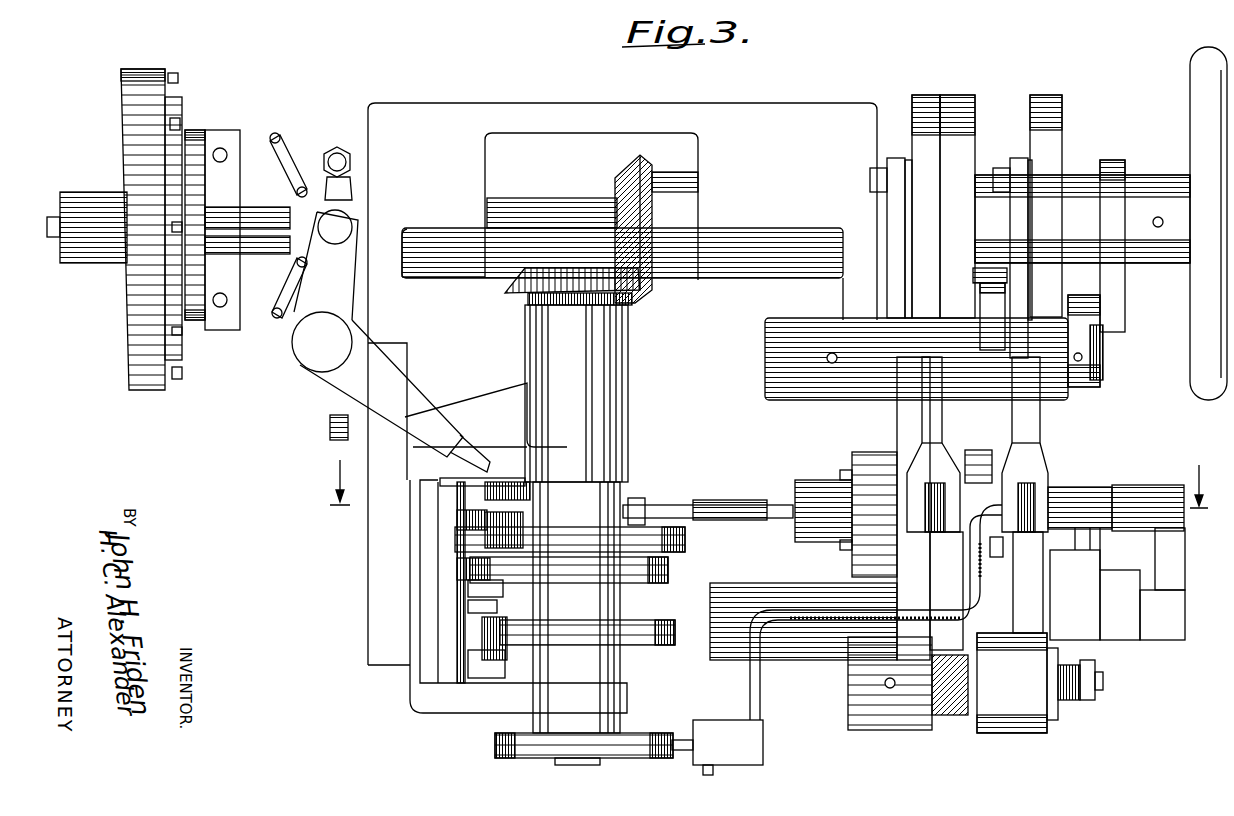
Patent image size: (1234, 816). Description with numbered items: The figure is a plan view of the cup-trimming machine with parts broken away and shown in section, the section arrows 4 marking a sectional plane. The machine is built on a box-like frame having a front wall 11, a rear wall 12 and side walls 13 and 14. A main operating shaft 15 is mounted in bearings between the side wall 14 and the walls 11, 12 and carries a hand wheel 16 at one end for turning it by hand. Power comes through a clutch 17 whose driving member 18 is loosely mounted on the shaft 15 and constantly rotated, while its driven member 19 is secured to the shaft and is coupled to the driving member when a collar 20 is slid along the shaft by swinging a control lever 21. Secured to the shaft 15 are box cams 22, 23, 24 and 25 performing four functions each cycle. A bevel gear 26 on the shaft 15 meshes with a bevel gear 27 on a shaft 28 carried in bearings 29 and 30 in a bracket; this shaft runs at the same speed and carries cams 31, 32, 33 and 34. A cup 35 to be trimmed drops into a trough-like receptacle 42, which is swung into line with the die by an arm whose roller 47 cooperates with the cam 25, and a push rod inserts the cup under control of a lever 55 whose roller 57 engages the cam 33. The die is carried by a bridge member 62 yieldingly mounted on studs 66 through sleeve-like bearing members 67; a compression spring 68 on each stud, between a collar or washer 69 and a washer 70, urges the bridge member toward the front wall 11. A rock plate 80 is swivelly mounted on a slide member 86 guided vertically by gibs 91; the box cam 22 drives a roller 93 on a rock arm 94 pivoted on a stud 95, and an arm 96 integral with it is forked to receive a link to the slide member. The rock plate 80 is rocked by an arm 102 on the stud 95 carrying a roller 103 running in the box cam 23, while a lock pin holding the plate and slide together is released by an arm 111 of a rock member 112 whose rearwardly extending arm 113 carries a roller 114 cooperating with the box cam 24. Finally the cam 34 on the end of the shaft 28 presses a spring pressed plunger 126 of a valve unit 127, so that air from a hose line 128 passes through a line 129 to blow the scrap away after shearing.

The section line 4- 4 is at (769, 497).
The front wall 11 is at (897, 418).
The rear wall 12 is at (410, 363).
The side wall 13 is at (668, 665).
The side wall 14 is at (664, 112).
The main operating shaft 15 is at (552, 215).
The hand wheel 16 is at (1202, 112).
The clutch 17 is at (193, 97).
The driving member 18 is at (142, 130).
The driven member 19 is at (177, 160).
The collar 20 is at (282, 195).
The control lever 21 is at (345, 376).
The box cam 22 is at (925, 96).
The box cam 23 is at (958, 112).
The box cam 24 is at (1047, 96).
The box cam 25 is at (1115, 285).
The bevel gear 26 is at (680, 260).
The bevel gear 27 is at (627, 316).
The shaft 28 is at (560, 268).
The bearing 29 is at (615, 430).
The bearing 30 is at (428, 712).
The cam 31 is at (686, 540).
The cam 32 is at (670, 568).
The cam 33 is at (656, 630).
The cam 34 is at (525, 738).
The cup 35 is at (1100, 582).
The trough-like receptacle 42 is at (1084, 492).
The roller 47 is at (1115, 317).
The lever 55 is at (480, 660).
The roller 57 is at (488, 633).
The bridge member 62 is at (1020, 560).
The stud 66 is at (950, 720).
The sleeve-like bearing member 67 is at (990, 733).
The compression spring 68 is at (1070, 700).
The collar or washer 69 is at (1092, 668).
The washer 70 is at (1053, 720).
The rock plate 80 is at (985, 460).
The slide member 86 is at (947, 572).
The gibs 91 is at (930, 526).
The roller 93 is at (908, 160).
The rock arm 94 is at (893, 203).
The stud 95 is at (1103, 369).
The arm 96 is at (932, 433).
The arm 102 is at (1005, 313).
The roller 103 is at (973, 280).
The arm 111 is at (1045, 492).
The rock member 112 is at (1062, 341).
The rearwardly extending arm 113 is at (1017, 173).
The roller 114 is at (1029, 155).
The spring pressed plunger 126 is at (680, 740).
The valve unit 127 is at (762, 750).
The hose line 128 is at (713, 770).
The line 129 is at (762, 690).